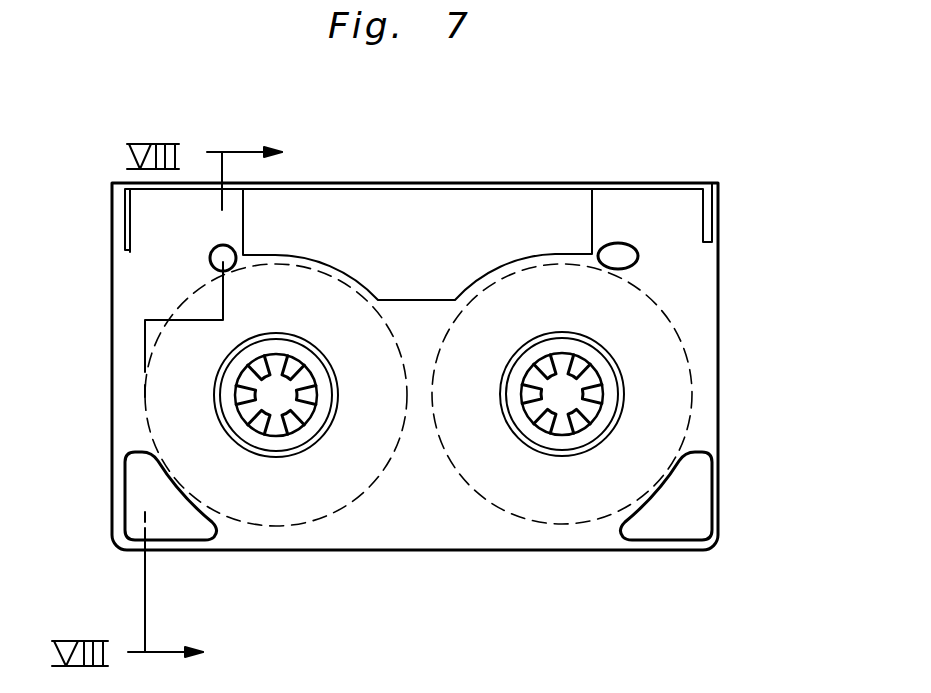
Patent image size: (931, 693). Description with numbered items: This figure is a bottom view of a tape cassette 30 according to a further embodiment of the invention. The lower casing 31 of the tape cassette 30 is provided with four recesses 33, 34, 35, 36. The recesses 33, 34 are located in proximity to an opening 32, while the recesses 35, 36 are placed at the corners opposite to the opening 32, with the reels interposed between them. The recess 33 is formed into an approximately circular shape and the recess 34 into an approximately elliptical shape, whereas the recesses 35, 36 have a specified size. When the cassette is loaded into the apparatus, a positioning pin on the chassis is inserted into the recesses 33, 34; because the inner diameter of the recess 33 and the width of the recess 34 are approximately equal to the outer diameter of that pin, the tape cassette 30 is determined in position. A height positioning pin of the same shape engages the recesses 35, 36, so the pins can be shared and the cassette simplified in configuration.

The tape cassette 30 is at (722, 360).
The lower casing 31 is at (708, 298).
The opening 32 is at (500, 205).
The recess 33 is at (212, 251).
The recess 34 is at (620, 254).
The recess 35 is at (172, 530).
The recess 36 is at (668, 528).